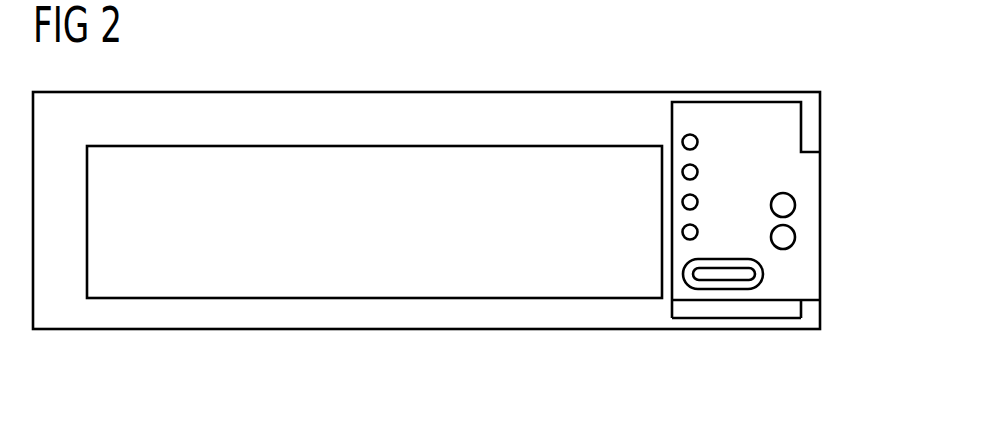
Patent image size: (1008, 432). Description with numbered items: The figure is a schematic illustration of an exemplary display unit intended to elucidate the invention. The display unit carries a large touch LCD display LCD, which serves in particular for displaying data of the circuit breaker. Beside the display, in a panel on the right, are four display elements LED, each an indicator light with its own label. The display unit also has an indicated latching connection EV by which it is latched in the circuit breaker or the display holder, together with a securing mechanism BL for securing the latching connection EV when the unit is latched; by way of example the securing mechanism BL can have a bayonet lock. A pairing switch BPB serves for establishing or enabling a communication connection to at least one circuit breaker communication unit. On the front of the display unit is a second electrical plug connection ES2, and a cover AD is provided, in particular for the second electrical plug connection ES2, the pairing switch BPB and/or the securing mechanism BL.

The display elements LED is at (723, 112).
The latching connection EV is at (812, 158).
The securing mechanism BL is at (796, 205).
The pairing switch BPB is at (796, 237).
The second electrical plug connection ES2 is at (762, 270).
The cover AD is at (761, 312).
The display LCD is at (374, 222).